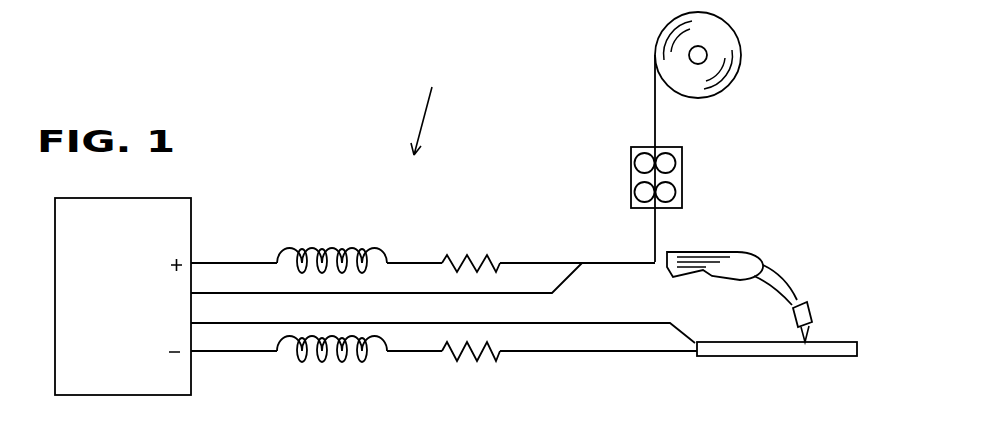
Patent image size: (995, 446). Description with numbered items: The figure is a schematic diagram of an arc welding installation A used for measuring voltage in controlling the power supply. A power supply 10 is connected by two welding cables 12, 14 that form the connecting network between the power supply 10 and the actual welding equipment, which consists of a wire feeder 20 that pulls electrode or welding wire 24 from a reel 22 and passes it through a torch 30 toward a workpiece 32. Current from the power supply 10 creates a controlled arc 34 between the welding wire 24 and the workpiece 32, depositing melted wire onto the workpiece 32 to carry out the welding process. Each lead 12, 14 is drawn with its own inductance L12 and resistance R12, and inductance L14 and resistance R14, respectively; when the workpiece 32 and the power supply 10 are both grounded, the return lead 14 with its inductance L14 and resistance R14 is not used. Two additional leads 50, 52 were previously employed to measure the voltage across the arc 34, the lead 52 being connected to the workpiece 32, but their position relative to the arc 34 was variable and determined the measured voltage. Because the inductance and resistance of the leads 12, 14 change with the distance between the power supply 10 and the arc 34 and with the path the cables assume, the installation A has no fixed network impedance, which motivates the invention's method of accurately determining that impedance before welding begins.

The power supply 10 is at (55, 262).
The welding cable 12 is at (411, 262).
The welding cable 14 is at (424, 354).
The inductance L12 is at (327, 252).
The resistance R12 is at (470, 260).
The inductance L14 is at (343, 364).
The resistance R14 is at (460, 354).
The wire feeder 20 is at (683, 178).
The reel 22 is at (741, 55).
The welding wire 24 is at (657, 228).
The torch 30 is at (763, 265).
The workpiece 32 is at (768, 357).
The arc 34 is at (797, 331).
The lead 50 is at (527, 291).
The lead 52 is at (568, 323).
The arc welding installation A is at (425, 106).